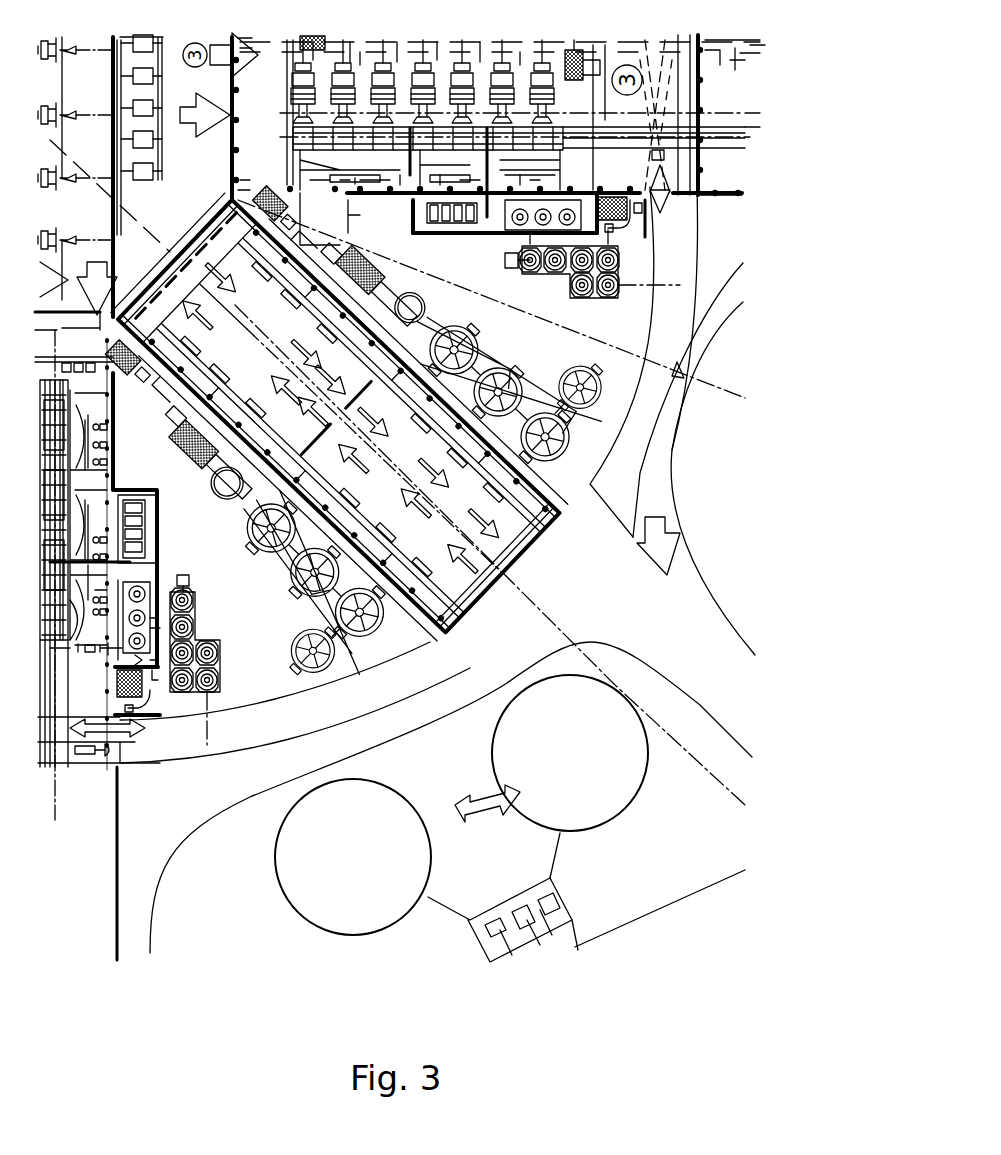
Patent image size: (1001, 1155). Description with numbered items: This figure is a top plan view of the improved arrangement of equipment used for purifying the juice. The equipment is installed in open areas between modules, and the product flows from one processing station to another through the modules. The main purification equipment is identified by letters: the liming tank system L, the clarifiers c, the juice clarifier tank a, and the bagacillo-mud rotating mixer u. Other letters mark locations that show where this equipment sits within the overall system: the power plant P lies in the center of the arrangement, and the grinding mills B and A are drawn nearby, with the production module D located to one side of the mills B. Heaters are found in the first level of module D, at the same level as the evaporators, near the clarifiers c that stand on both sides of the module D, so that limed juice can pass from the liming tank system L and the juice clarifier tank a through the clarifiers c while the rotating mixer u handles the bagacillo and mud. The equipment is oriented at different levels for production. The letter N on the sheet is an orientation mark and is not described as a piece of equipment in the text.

The power plant P is at (193, 222).
The grinding mill A is at (748, 120).
The grinding mill B is at (97, 777).
The production module D is at (520, 587).
The liming tank system L is at (545, 281).
The clarifiers c is at (535, 364).
The bagacillo-mud rotating mixer u is at (368, 252).
The juice clarifier tank a is at (418, 283).
The north direction N is at (398, 495).